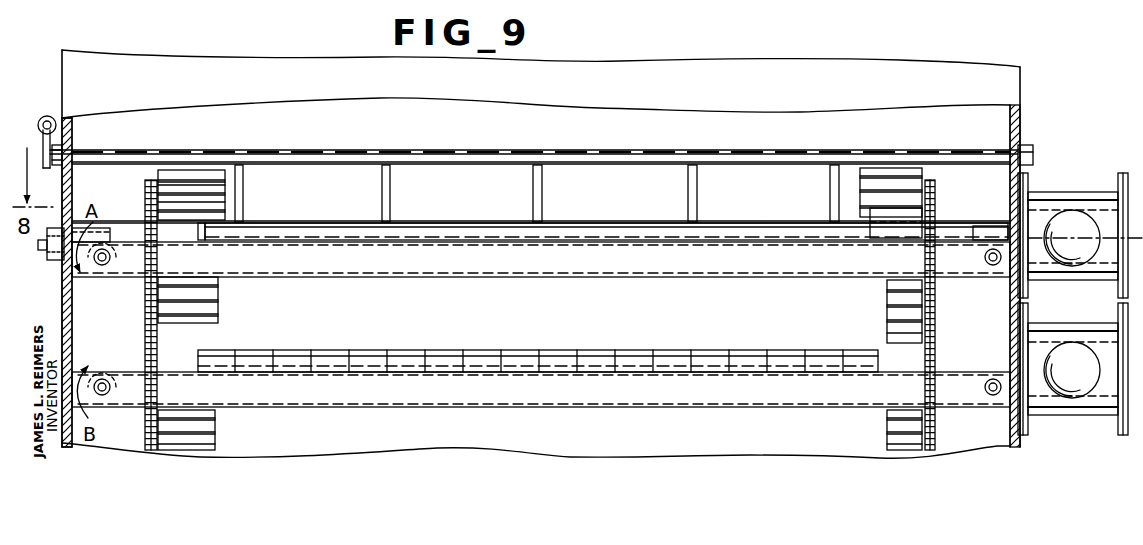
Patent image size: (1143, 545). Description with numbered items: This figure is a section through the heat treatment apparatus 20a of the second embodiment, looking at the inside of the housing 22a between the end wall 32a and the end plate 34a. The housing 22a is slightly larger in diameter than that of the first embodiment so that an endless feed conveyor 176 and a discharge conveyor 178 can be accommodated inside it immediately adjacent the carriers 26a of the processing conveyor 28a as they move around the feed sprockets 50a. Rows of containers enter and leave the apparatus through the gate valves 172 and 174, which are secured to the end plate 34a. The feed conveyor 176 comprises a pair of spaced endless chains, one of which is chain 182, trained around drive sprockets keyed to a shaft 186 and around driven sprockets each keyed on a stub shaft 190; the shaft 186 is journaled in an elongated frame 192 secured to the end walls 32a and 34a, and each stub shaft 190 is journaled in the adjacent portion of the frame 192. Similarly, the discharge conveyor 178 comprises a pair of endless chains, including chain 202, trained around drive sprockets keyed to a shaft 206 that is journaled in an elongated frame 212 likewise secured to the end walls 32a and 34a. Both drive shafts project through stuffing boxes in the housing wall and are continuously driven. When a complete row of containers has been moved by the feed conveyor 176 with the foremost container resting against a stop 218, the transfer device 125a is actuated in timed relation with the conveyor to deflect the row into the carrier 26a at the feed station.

The heat treatment apparatus 20a is at (1003, 55).
The housing 22a is at (1022, 80).
The end wall 32a is at (72, 128).
The end plate 34a is at (40, 119).
The processing conveyor 28a is at (207, 172).
The transfer device 125a is at (484, 147).
The feed sprockets 50a is at (145, 190).
The carriers 26a is at (218, 289).
The endless feed conveyor 176 is at (430, 240).
The endless chain 182 is at (574, 240).
The stop 218 is at (186, 238).
The drive shaft 186 is at (111, 257).
The stub shaft 190 is at (985, 257).
The elongated frame 192 is at (625, 273).
The discharge conveyor 178 is at (414, 370).
The endless chain 202 is at (566, 372).
The drive shaft 206 is at (111, 387).
The elongated frame 212 is at (582, 404).
The gate valve 172 is at (1050, 198).
The gate valve 174 is at (1050, 328).